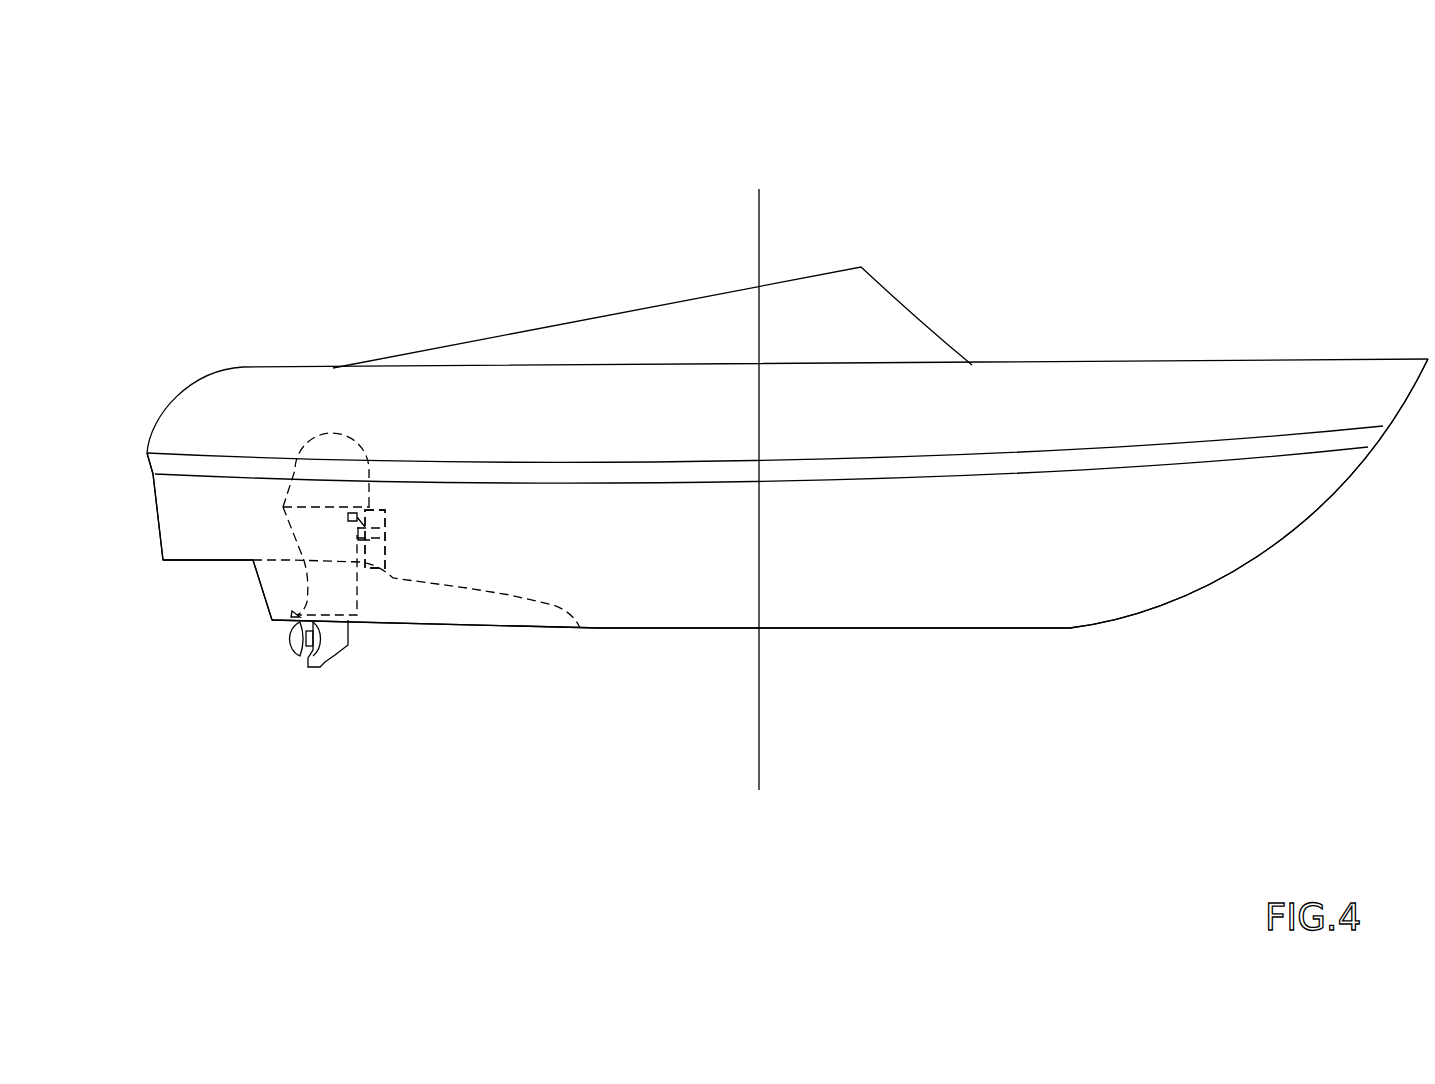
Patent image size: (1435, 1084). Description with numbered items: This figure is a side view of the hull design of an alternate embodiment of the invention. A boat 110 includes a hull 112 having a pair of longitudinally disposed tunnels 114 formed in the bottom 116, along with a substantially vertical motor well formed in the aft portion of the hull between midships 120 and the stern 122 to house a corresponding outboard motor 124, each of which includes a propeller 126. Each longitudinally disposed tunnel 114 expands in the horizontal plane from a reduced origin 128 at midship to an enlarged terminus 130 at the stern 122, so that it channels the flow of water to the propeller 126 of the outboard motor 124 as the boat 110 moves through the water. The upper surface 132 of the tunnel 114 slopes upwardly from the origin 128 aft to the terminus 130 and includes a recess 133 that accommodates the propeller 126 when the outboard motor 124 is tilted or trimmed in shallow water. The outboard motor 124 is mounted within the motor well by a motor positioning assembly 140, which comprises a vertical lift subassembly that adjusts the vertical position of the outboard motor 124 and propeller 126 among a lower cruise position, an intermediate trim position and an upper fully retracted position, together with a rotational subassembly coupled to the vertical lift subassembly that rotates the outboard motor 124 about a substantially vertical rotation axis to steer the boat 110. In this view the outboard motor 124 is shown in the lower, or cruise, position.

The boat 110 is at (1042, 176).
The hull 112 is at (1205, 640).
The longitudinally disposed tunnel 114 is at (387, 613).
The bottom 116 is at (990, 628).
The midships 120 is at (759, 693).
The stern 122 is at (153, 520).
The outboard motor 124 is at (372, 426).
The propeller 126 is at (290, 645).
The reduced origin 128 is at (580, 628).
The enlarged terminus 130 is at (250, 568).
The upper surface 132 is at (470, 590).
The recess 133 is at (269, 577).
The motor positioning assembly 140 is at (416, 532).